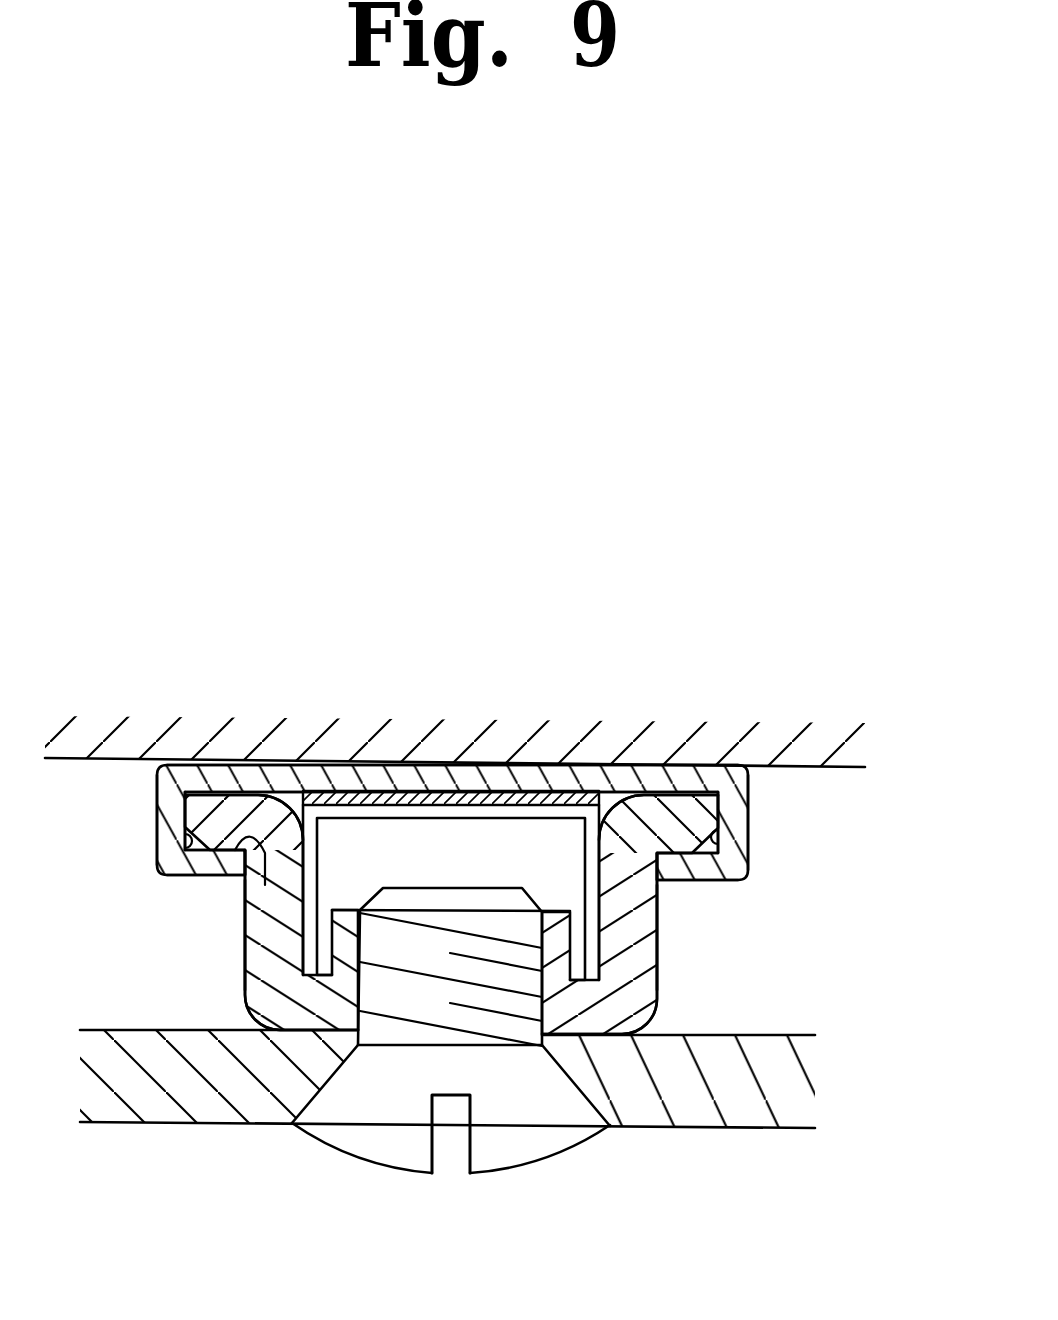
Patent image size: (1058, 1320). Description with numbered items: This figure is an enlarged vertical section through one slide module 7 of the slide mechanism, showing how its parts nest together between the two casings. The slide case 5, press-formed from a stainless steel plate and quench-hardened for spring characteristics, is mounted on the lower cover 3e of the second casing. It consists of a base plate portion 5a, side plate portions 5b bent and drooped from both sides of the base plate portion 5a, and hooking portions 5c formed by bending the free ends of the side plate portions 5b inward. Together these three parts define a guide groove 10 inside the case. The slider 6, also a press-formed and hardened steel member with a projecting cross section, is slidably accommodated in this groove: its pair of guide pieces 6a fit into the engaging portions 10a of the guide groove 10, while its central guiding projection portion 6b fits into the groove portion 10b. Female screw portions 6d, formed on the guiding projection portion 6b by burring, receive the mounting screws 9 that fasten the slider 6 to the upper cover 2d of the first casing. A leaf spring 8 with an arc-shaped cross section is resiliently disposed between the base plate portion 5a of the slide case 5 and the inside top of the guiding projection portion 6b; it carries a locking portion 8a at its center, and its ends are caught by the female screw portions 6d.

The upper cover 2d is at (192, 1088).
The lower cover 3e is at (112, 760).
The slide case 5 is at (461, 802).
The base plate portion 5a is at (482, 778).
The side plate portions 5b is at (147, 813).
The hooking portions 5c is at (190, 872).
The slider 6 is at (466, 939).
The guide pieces 6a is at (240, 817).
The guiding projection portion 6b is at (341, 1020).
The female screw portions 6d is at (552, 957).
The slide module 7 is at (480, 939).
The leaf spring 8 is at (446, 807).
The locking portion 8a is at (428, 795).
The mounting screws 9 is at (508, 1152).
The guide groove 10 is at (243, 913).
The engaging portions 10a is at (150, 865).
The groove portion 10b is at (657, 907).